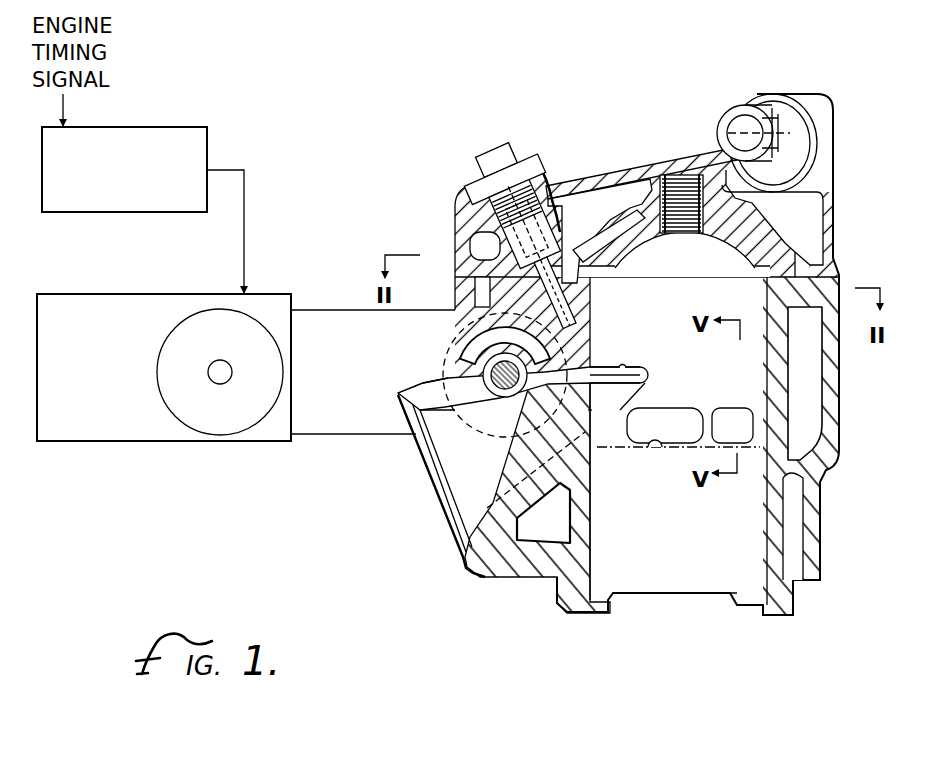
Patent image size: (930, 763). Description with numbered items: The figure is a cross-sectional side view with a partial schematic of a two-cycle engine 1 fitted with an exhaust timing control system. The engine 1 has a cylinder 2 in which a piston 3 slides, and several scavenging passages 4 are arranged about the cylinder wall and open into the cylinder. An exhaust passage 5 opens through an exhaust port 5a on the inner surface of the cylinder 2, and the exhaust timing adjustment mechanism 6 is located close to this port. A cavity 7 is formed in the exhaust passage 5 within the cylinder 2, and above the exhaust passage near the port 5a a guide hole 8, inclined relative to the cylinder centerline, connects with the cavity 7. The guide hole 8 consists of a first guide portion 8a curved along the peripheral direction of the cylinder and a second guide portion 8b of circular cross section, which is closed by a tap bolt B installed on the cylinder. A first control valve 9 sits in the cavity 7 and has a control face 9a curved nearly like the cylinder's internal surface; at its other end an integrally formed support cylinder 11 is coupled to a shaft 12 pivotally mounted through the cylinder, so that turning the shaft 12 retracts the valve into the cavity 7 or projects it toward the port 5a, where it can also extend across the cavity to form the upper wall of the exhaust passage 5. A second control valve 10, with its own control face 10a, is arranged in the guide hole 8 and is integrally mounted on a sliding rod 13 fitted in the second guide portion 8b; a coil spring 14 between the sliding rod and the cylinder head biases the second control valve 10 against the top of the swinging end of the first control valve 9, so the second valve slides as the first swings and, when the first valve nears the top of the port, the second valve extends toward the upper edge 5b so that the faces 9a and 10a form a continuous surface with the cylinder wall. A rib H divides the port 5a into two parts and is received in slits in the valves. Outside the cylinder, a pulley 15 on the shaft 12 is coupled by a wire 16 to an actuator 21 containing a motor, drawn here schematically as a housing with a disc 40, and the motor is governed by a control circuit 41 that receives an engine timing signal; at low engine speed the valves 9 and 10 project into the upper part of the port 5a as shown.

The two-cycle engine 1 is at (860, 106).
The cylinder 2 is at (843, 290).
The piston 3 is at (655, 447).
The scavenging passages 4 is at (695, 415).
The exhaust passage 5 is at (465, 468).
The exhaust port 5a is at (595, 432).
The upper edge of the port 5b is at (628, 366).
The exhaust timing adjustment mechanism 6 is at (609, 354).
The cavity 7 is at (472, 336).
The guide hole 8 is at (576, 107).
The first guide portion 8a is at (575, 203).
The second guide portion 8b is at (545, 192).
The first control valve 9 is at (525, 415).
The control face 9a is at (641, 383).
The second control valve 10 is at (560, 324).
The control face 10a is at (638, 368).
The support cylinder 11 is at (483, 367).
The shaft 12 is at (480, 400).
The sliding rod 13 is at (490, 242).
The coil spring 14 is at (492, 236).
The pulley 15 is at (445, 372).
The wire 16 is at (368, 437).
The actuator 21 is at (117, 442).
The cam disc 40 is at (181, 424).
The control circuit 41 is at (134, 127).
The tap bolt B is at (488, 148).
The rib H is at (588, 410).